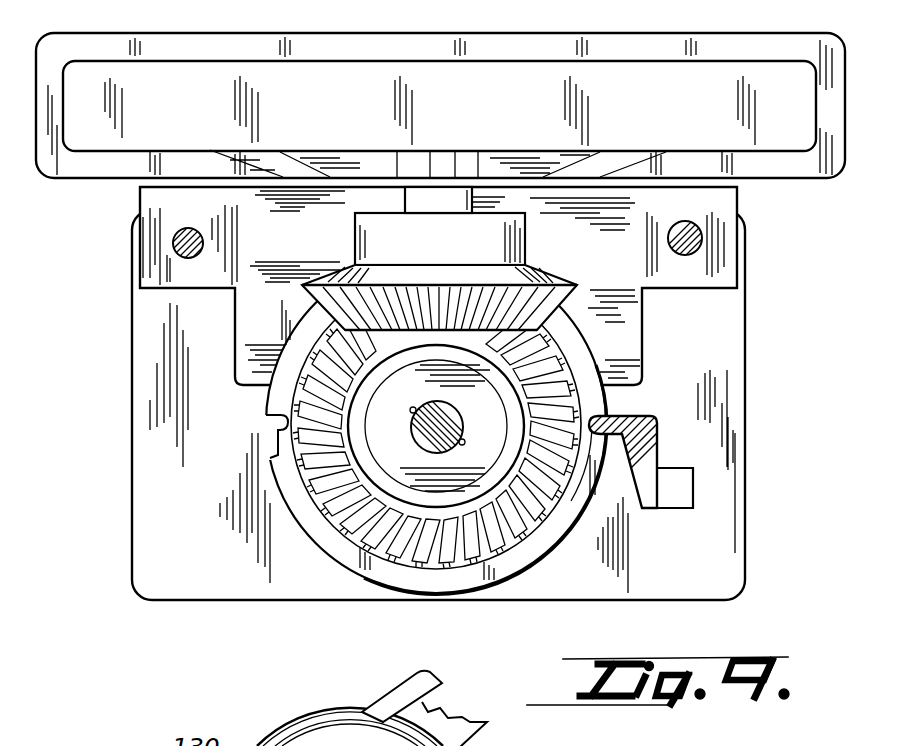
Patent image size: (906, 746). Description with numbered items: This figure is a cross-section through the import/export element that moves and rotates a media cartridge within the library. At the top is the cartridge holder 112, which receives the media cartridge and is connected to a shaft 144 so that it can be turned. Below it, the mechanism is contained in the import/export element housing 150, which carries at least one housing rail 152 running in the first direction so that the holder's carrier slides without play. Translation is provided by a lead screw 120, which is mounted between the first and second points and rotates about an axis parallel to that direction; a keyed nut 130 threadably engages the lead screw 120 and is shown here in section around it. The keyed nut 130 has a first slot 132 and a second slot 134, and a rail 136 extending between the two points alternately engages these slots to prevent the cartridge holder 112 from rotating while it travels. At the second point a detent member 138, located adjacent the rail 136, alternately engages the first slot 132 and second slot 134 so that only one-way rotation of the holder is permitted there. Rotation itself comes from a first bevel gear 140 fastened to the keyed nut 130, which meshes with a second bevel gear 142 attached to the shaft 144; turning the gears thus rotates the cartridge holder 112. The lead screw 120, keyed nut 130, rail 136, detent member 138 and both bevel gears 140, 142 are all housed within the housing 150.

The cartridge holder 112 is at (626, 33).
The lead screw 120 is at (412, 433).
The keyed nut 130 is at (543, 536).
The first slot 132 is at (270, 424).
The second slot 134 is at (603, 398).
The rail 136 is at (657, 452).
The detent member 138 is at (518, 548).
The first bevel gear 140 is at (403, 543).
The second bevel gear 142 is at (576, 288).
The shaft 144 is at (473, 197).
The import/export element housing 150 is at (747, 360).
The housing rail 152 is at (173, 244).